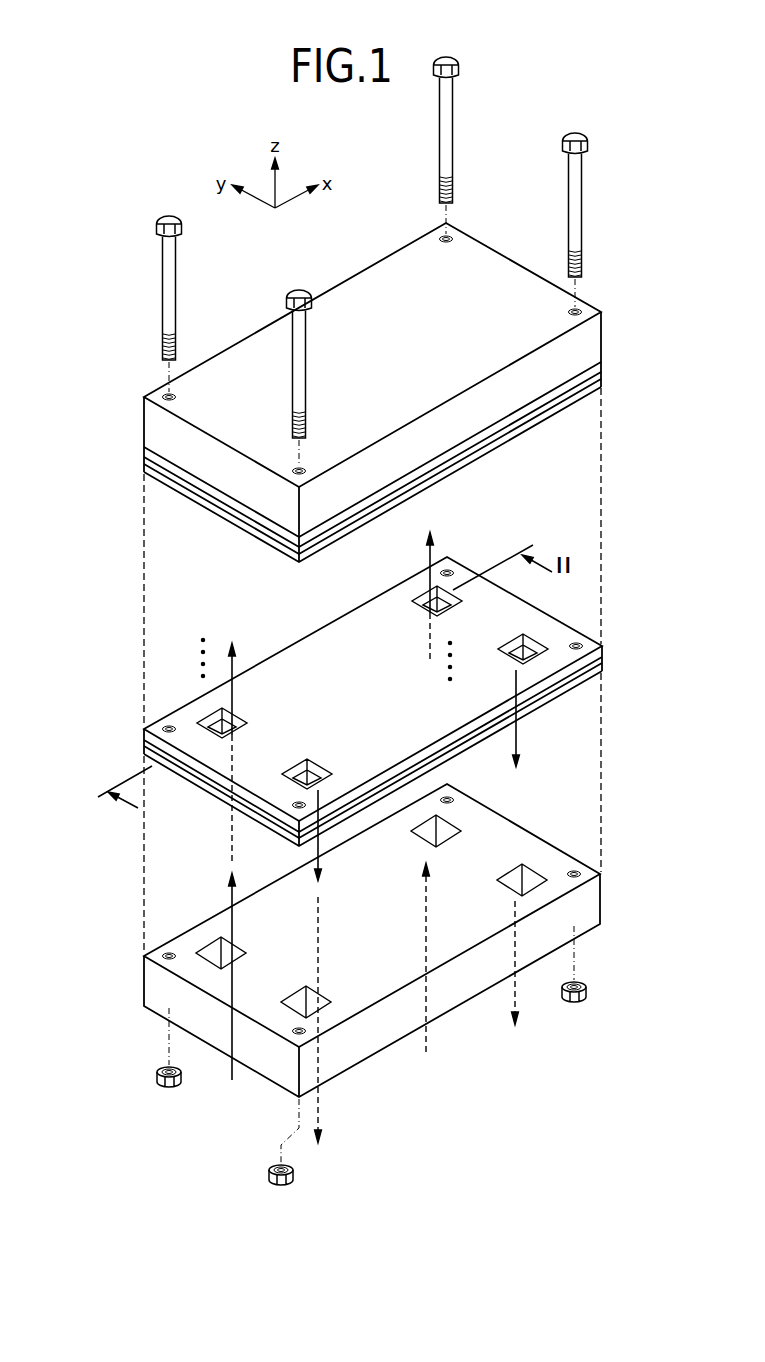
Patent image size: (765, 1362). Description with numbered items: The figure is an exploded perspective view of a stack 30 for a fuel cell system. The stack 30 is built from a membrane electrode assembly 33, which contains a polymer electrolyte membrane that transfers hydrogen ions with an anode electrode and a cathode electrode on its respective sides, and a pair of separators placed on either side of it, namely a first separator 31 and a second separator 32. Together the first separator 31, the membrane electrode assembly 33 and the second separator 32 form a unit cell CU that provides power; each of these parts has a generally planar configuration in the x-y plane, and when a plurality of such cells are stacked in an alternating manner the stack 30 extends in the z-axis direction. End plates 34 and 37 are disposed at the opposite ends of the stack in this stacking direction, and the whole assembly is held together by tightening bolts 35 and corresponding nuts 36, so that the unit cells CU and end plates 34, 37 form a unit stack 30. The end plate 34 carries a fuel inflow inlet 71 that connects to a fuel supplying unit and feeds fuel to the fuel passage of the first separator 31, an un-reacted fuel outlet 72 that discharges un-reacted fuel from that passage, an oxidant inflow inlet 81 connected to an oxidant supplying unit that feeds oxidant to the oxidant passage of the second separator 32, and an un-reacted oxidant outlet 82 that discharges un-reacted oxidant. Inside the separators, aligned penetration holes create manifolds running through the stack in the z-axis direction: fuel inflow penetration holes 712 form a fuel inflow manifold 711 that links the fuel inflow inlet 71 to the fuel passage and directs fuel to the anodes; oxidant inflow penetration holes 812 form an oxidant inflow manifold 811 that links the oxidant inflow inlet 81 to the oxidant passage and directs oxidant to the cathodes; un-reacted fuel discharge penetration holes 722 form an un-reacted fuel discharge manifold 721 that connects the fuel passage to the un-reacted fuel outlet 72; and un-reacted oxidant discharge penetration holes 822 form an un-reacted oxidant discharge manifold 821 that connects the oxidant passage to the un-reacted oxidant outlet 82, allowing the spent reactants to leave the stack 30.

The stack 30 is at (622, 698).
The first separator 31 is at (146, 733).
The second separator 32 is at (146, 751).
The membrane electrode assembly 33 is at (146, 744).
The end plate 34 is at (585, 920).
The tightening bolt 35 is at (169, 268).
The nut 36 is at (587, 998).
The end plate 37 is at (583, 345).
The unit cell cu is at (86, 702).
The fuel inflow inlet 71 is at (432, 830).
The un-reacted fuel outlet 72 is at (316, 990).
The oxidant inflow inlet 81 is at (218, 950).
The un-reacted oxidant outlet 82 is at (524, 876).
The fuel inflow manifold 711 is at (432, 553).
The fuel inflow penetration hole 712 is at (420, 600).
The un-reacted fuel discharge manifold 721 is at (315, 740).
The un-reacted fuel discharge penetration hole 722 is at (284, 775).
The oxidant inflow manifold 811 is at (232, 660).
The oxidant inflow penetration hole 812 is at (210, 738).
The un-reacted oxidant discharge manifold 821 is at (520, 645).
The un-reacted oxidant discharge penetration hole 822 is at (560, 626).